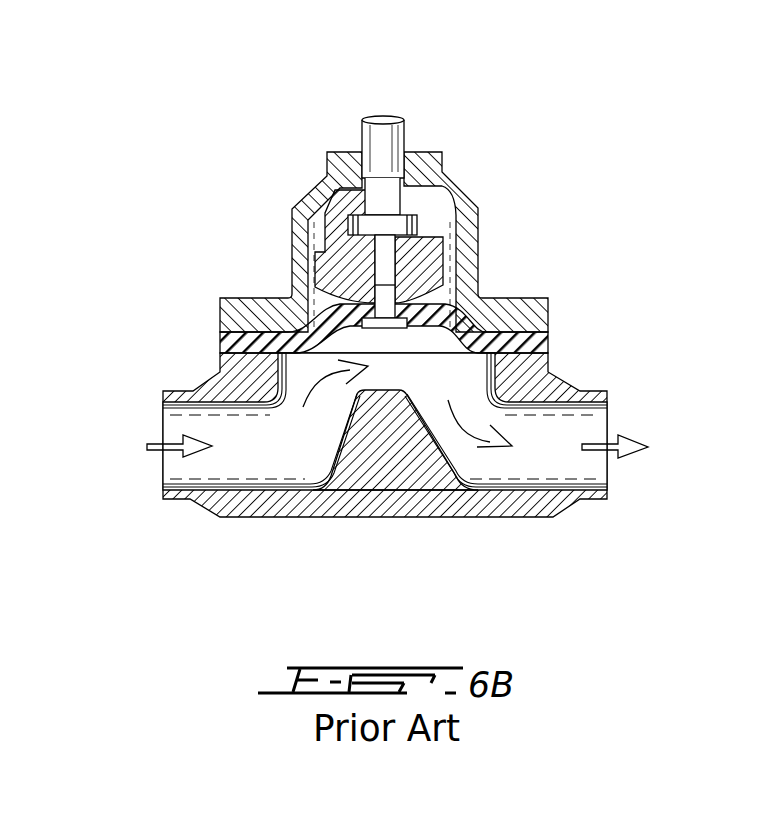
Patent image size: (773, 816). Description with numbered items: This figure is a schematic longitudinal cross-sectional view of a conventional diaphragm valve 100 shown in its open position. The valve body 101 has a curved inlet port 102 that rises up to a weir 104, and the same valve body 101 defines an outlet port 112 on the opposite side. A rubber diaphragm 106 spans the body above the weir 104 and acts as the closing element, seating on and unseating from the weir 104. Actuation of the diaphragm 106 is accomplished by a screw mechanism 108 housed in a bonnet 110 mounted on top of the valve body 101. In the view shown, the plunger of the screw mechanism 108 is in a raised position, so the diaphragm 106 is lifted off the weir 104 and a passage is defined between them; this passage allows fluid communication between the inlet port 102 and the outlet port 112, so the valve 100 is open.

The diaphragm valve 100 is at (151, 190).
The valve body 101 is at (577, 375).
The inlet port 102 is at (150, 408).
The weir 104 is at (414, 383).
The diaphragm 106 is at (562, 340).
The screw mechanism 108 is at (417, 142).
The bonnet 110 is at (491, 195).
The outlet port 112 is at (620, 409).